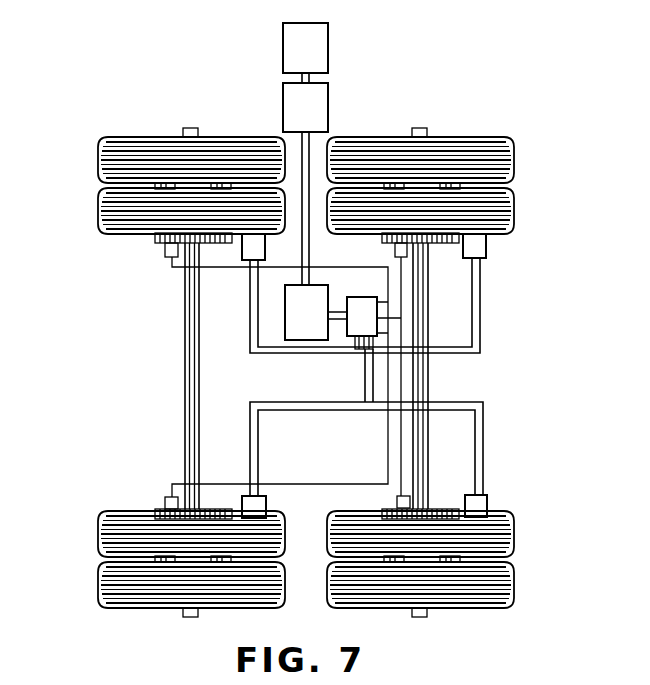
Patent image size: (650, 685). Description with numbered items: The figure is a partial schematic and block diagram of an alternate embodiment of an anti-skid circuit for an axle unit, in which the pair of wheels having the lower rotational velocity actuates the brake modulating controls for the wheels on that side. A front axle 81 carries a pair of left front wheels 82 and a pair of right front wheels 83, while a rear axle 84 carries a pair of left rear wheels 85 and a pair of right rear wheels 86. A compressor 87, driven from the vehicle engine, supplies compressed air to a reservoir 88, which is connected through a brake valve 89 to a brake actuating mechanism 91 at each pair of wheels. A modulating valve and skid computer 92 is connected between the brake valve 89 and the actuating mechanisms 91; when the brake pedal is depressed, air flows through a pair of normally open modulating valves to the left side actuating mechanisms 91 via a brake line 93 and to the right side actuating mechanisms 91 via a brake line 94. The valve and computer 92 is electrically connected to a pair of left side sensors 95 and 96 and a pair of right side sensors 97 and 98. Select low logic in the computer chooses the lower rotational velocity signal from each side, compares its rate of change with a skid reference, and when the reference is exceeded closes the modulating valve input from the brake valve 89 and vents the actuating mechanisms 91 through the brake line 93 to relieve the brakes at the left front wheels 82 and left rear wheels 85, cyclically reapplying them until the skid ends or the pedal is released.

The front axle 81 is at (184, 381).
The left front wheels 82 is at (97, 588).
The right front wheels 83 is at (97, 208).
The rear axle 84 is at (429, 379).
The left rear wheels 85 is at (514, 588).
The right rear wheels 86 is at (514, 208).
The compressor 87 is at (305, 48).
The reservoir 88 is at (305, 179).
The brake valve 89 is at (316, 312).
The brake actuating mechanism 91 is at (266, 247).
The modulating valve and skid computer 92 is at (374, 316).
The brake line 93 is at (364, 379).
The brake line 94 is at (345, 346).
The left side sensor 95 is at (165, 500).
The left side sensor 96 is at (397, 503).
The right side sensor 97 is at (164, 251).
The right side sensor 98 is at (394, 252).